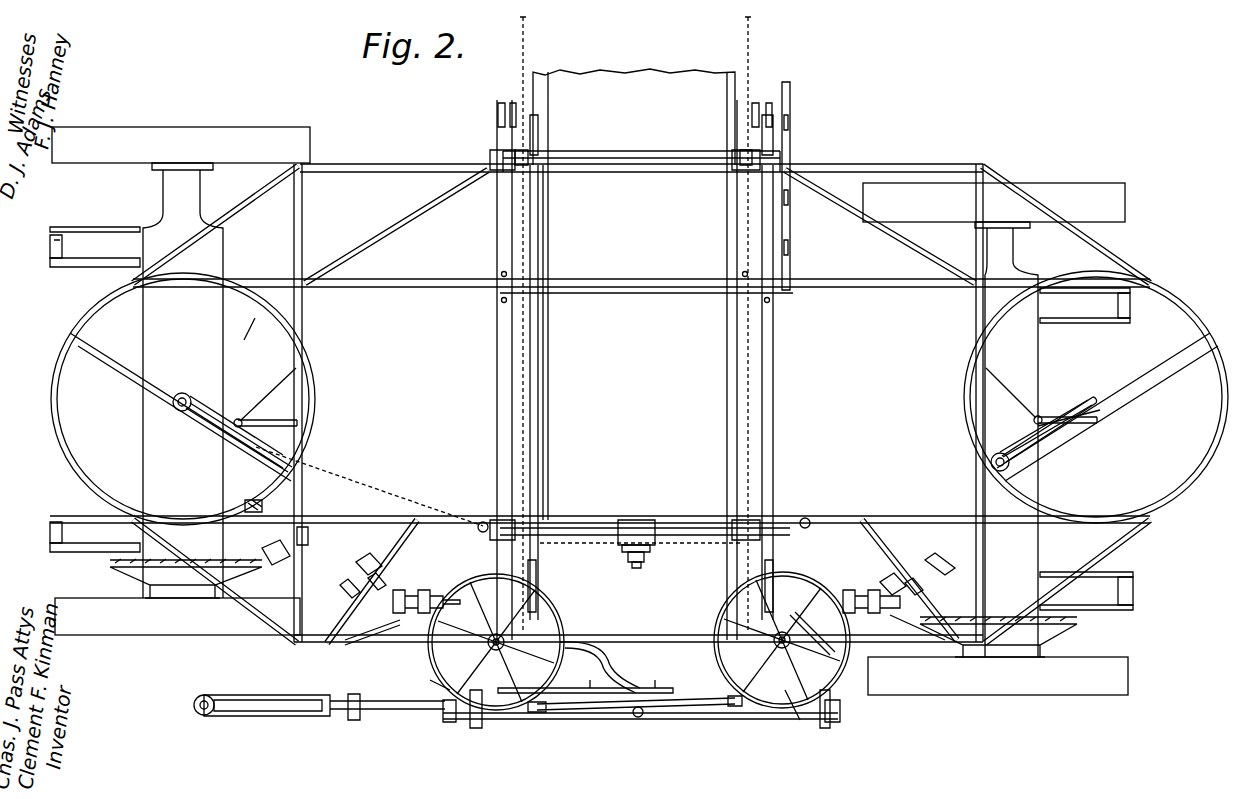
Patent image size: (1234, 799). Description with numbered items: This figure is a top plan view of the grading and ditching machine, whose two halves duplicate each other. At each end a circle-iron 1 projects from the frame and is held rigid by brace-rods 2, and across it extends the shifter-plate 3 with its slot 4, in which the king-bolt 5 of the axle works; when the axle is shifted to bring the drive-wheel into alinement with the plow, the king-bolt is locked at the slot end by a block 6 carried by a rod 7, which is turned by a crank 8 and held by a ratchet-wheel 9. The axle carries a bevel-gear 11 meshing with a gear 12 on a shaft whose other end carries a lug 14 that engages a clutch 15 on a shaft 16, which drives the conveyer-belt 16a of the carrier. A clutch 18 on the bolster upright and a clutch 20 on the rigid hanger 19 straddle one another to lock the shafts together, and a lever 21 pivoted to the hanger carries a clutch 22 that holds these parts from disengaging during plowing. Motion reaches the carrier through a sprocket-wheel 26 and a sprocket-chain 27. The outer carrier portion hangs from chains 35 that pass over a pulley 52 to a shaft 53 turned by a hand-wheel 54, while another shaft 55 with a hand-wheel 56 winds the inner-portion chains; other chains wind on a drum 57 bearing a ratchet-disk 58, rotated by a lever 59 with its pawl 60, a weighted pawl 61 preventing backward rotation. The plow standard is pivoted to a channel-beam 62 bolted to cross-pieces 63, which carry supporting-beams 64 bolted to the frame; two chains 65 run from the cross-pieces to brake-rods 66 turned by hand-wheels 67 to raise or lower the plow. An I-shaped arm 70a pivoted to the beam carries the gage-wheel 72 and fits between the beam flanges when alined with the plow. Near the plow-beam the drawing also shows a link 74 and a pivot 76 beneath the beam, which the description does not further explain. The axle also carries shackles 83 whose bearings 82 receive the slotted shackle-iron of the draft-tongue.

The circle-iron 1 is at (262, 300).
The brace-rods 2 is at (240, 283).
The shifter-plate 3 is at (135, 378).
The slot 4 is at (240, 436).
The king-bolt 5 is at (180, 410).
The block 6 is at (200, 430).
The rod 7 is at (239, 418).
The crank 8 is at (274, 420).
The ratchet-wheel 9 is at (1088, 423).
The bevel-gear 11 is at (110, 566).
The gear 12 is at (256, 500).
The lug 14 is at (865, 642).
The clutch 15 is at (412, 590).
The shaft 16 is at (465, 603).
The conveyer-belt 16a is at (634, 232).
The clutch 18 is at (280, 562).
The hanger 19 is at (308, 534).
The clutch 20 is at (345, 596).
The lever 21 is at (372, 564).
The clutch 22 is at (368, 578).
The sprocket-wheel 26 is at (540, 596).
The sprocket-chain 27 is at (500, 380).
The chains 35 is at (526, 30).
The pulley 52 is at (530, 178).
The shaft 53 is at (640, 293).
The hand-wheel 54 is at (797, 308).
The shaft 55 is at (641, 158).
The hand-wheel 56 is at (792, 128).
The drum 57 is at (640, 520).
The ratchet-disk 58 is at (628, 552).
The lever 59 is at (638, 562).
The pawl 60 is at (644, 566).
The weighted pawl 61 is at (630, 690).
The channel-beam 62 is at (678, 722).
The cross-pieces 63 is at (445, 715).
The supporting-beams 64 is at (474, 728).
The chains 65 is at (830, 655).
The brake-rods 66 is at (504, 648).
The hand-wheels 67 is at (432, 682).
The arm 70a is at (395, 690).
The gage-wheel 72 is at (310, 697).
The link 74 is at (590, 712).
The pivot 76 is at (636, 718).
The bearings 82 is at (62, 246).
The shackles 83 is at (100, 235).